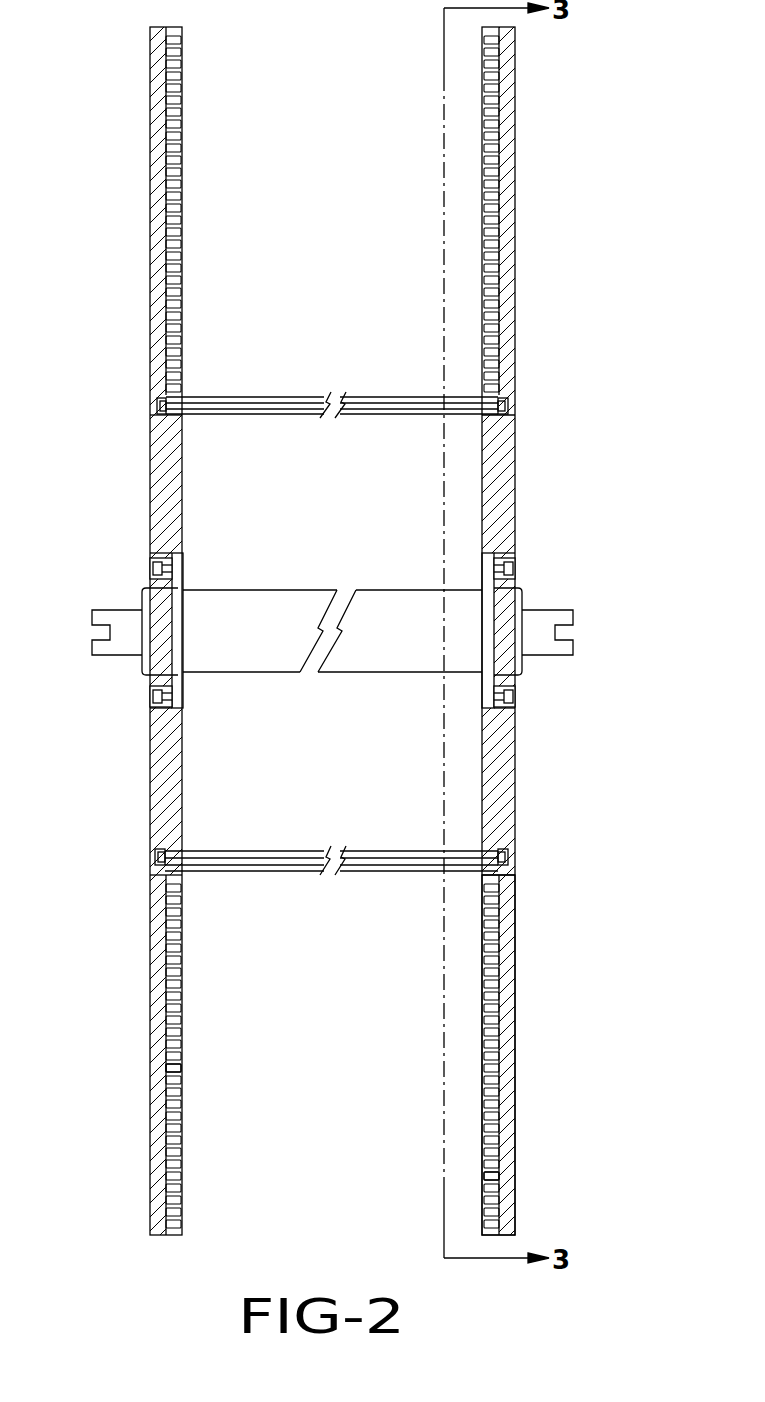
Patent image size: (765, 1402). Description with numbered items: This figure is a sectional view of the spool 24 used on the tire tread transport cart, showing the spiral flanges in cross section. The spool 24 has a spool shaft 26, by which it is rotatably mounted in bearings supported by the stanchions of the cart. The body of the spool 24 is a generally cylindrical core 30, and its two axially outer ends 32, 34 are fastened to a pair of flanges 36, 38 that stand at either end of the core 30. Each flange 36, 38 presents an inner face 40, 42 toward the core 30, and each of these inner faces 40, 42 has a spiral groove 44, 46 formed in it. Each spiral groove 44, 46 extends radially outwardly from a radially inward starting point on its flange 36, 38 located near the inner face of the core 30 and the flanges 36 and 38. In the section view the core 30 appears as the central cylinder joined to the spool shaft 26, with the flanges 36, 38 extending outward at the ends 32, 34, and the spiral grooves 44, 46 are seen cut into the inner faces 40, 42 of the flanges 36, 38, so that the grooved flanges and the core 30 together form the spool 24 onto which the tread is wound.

The spool 24 is at (382, 631).
The spool shaft 26 is at (540, 612).
The cylindrical core 30 is at (327, 899).
The axially outer end 32 is at (157, 856).
The axially outer end 34 is at (510, 857).
The flange 36 is at (382, 631).
The flange 38 is at (495, 1055).
The inner face 40 is at (175, 975).
The inner face 42 is at (484, 1003).
The spiral groove 44 is at (182, 1075).
The spiral groove 46 is at (484, 1174).